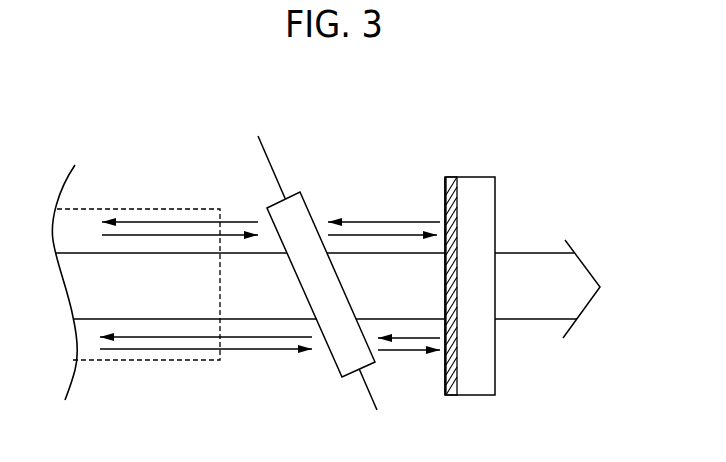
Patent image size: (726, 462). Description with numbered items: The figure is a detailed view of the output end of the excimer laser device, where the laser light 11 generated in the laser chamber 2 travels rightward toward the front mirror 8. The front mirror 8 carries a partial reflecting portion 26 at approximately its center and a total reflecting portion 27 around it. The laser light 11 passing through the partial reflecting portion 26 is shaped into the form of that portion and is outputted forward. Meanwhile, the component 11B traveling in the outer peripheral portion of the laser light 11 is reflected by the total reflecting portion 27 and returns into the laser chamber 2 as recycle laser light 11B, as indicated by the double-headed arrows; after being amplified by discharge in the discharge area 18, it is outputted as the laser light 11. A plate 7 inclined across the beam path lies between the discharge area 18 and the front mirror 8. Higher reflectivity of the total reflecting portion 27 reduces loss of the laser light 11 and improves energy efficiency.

The laser chamber 2 is at (259, 141).
The dichroic mirror / beam splitter plate 7 is at (306, 203).
The front mirror 8 is at (487, 183).
The laser light 11 is at (532, 265).
The recycle laser light 11B is at (365, 220).
The discharge area 18 is at (113, 209).
The partial reflecting portion 26 is at (443, 289).
The total reflecting portion 27 is at (452, 177).